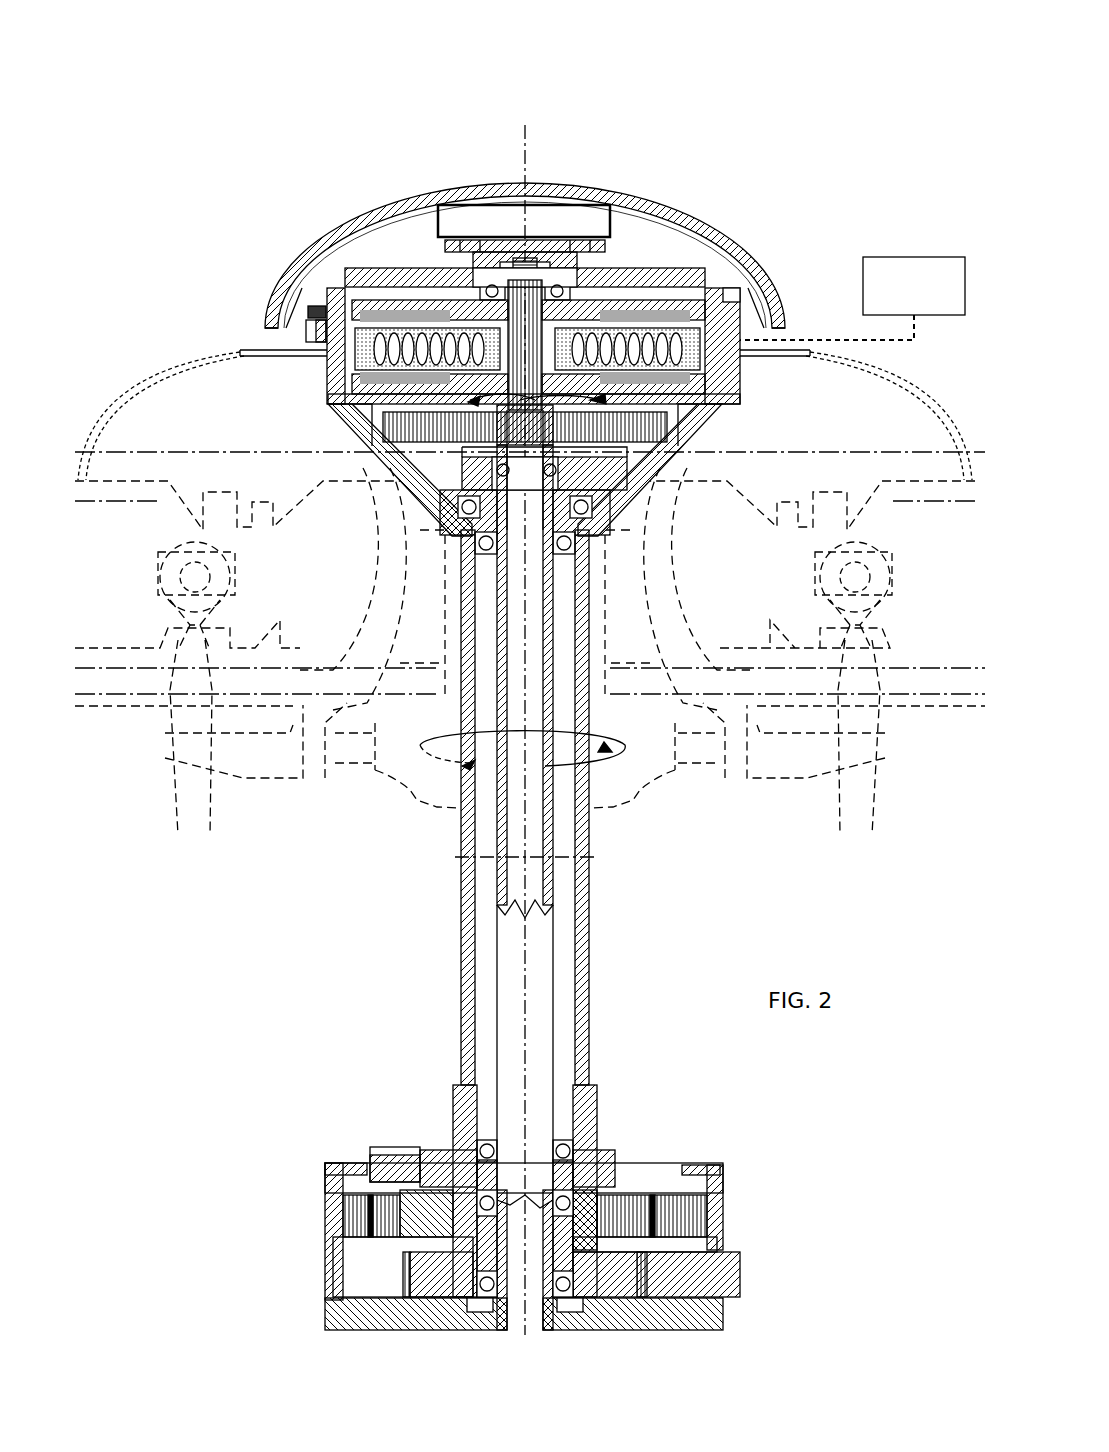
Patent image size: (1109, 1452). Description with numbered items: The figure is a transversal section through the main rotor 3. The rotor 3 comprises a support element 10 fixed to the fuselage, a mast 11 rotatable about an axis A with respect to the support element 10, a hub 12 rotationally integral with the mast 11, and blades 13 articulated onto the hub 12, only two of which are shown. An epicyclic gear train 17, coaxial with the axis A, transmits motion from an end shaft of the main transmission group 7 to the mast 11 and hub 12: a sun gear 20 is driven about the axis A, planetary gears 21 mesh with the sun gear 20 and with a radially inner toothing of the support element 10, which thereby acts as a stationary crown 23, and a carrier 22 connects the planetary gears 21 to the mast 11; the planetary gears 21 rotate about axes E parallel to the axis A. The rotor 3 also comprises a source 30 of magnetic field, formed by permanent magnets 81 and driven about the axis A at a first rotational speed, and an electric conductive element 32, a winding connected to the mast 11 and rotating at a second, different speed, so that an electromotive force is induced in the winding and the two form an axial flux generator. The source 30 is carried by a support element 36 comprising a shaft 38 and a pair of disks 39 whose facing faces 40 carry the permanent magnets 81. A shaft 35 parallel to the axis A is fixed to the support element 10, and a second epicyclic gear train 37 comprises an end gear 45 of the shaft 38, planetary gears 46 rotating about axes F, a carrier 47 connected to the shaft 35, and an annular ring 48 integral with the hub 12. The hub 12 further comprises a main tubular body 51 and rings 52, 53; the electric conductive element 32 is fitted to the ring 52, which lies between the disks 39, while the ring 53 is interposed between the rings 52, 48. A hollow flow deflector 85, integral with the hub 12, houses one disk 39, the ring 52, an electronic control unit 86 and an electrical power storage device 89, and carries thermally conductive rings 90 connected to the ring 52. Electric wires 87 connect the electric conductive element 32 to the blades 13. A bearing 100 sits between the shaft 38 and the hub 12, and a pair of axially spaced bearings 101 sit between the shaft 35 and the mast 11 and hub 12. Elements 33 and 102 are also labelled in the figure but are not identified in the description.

The rotor 3 is at (690, 130).
The main transmission group 7 is at (714, 996).
The support element 10 is at (612, 1308).
The mast 11 is at (578, 912).
The hub 12 is at (737, 410).
The blades 13 is at (105, 740).
The epicyclic gear train 17 is at (714, 1170).
The sun gear 20 is at (475, 1270).
The planetary gears 21 is at (620, 1198).
The carrier 22 is at (375, 1162).
The stationary crown 23 is at (706, 1208).
The source of magnetic field 30 is at (590, 306).
The electric conductive element 32 is at (420, 340).
The hub cover 33 is at (412, 476).
The shaft 35 is at (560, 886).
The support element 36 is at (615, 310).
The epicyclic gear train 37 is at (590, 475).
The shaft 38 is at (540, 268).
The disks 39 is at (463, 298).
The faces 40 is at (717, 344).
The end gear 45 is at (527, 470).
The planetary gears 46 is at (600, 430).
The carrier 47 is at (462, 510).
The annular ring 48 is at (380, 410).
The main tubular body 51 is at (333, 427).
The ring 52 is at (325, 285).
The ring 53 is at (448, 414).
The permanent magnets 81 is at (405, 305).
The flow deflector 85 is at (612, 192).
The electronic control unit 86 is at (484, 215).
The electric wires 87 is at (175, 360).
The electrical power storage device 89 is at (925, 262).
The thermally conductive rings 90 is at (440, 300).
The bearing 100 is at (493, 268).
The bearings 101 is at (582, 508).
The bearing 102 is at (575, 544).
The axis A is at (528, 150).
The axes E is at (398, 1150).
The axes F is at (520, 430).